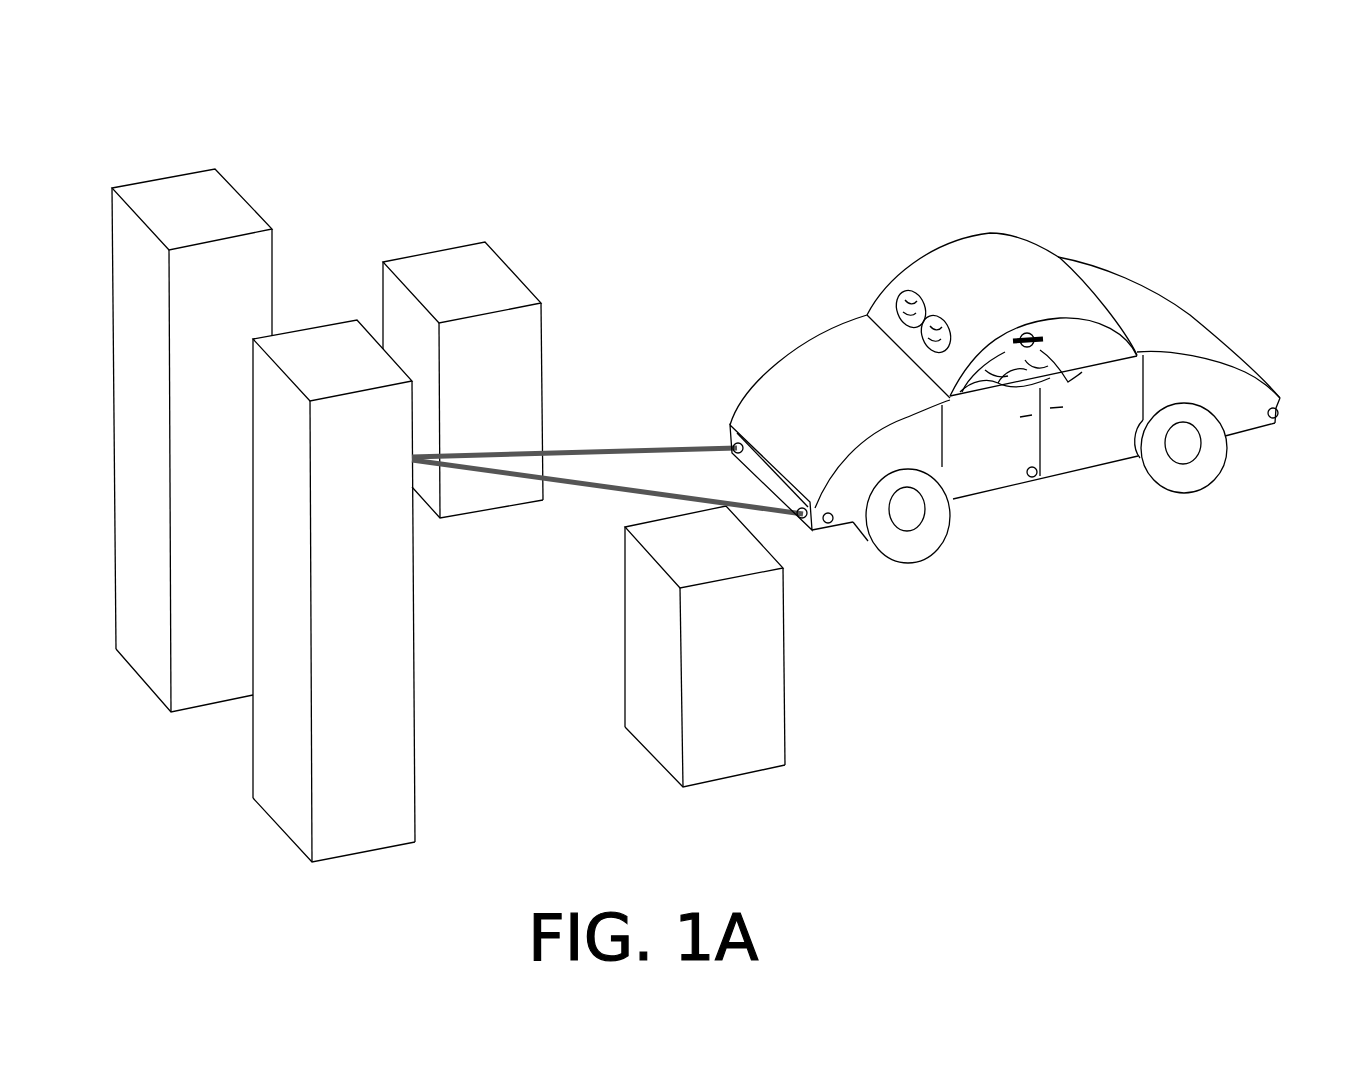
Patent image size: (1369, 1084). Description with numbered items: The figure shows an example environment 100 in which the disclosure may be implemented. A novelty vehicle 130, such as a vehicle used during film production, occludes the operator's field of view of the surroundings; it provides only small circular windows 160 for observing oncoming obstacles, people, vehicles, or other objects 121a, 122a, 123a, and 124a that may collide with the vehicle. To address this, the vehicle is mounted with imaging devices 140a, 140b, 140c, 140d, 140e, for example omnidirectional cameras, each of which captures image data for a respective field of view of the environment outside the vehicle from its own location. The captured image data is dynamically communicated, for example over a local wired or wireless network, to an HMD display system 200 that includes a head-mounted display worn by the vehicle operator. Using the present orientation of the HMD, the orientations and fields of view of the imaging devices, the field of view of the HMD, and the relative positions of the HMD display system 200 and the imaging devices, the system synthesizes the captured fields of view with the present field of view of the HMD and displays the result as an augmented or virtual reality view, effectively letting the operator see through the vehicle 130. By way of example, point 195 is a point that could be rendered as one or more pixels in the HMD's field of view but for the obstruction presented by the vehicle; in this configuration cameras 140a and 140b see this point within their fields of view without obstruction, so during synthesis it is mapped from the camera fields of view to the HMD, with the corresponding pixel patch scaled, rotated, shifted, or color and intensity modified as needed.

The environment 100 is at (150, 78).
The object 124a is at (168, 203).
The object 123a is at (355, 338).
The object 121a is at (440, 270).
The object 122a is at (631, 632).
The point 195 is at (416, 472).
The novelty vehicle 130 is at (797, 355).
The imaging device 140a is at (733, 446).
The imaging device 140b is at (801, 519).
The imaging device 140c is at (828, 524).
The imaging device 140d is at (1033, 478).
The imaging device 140e is at (1275, 419).
The small circular windows 160 is at (944, 322).
The HMD display system 200 is at (1014, 346).